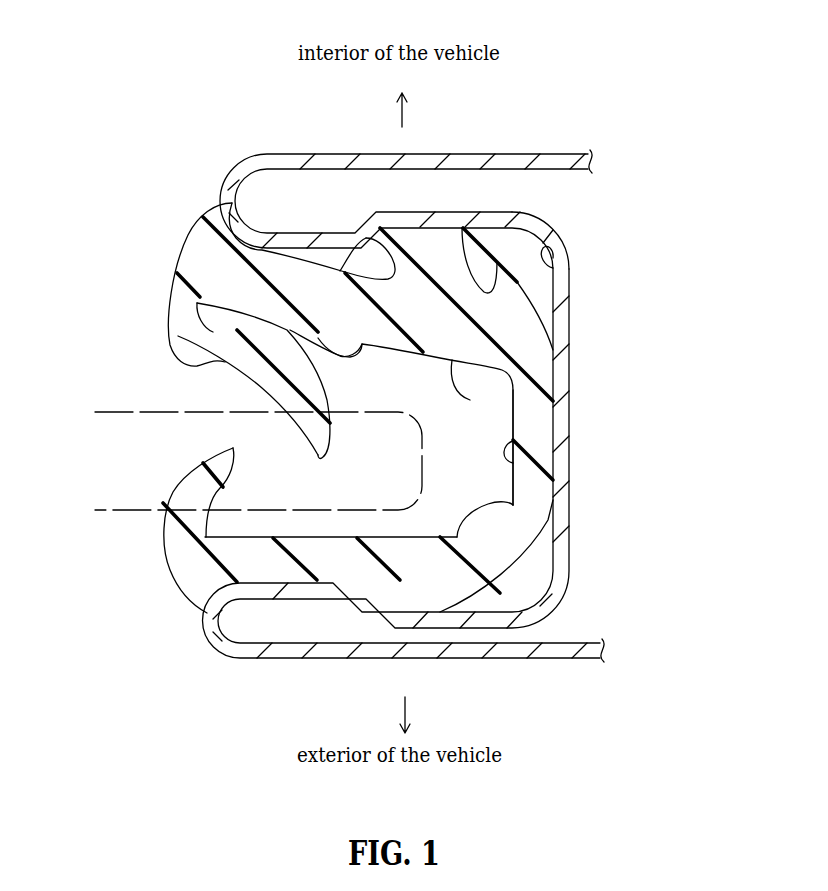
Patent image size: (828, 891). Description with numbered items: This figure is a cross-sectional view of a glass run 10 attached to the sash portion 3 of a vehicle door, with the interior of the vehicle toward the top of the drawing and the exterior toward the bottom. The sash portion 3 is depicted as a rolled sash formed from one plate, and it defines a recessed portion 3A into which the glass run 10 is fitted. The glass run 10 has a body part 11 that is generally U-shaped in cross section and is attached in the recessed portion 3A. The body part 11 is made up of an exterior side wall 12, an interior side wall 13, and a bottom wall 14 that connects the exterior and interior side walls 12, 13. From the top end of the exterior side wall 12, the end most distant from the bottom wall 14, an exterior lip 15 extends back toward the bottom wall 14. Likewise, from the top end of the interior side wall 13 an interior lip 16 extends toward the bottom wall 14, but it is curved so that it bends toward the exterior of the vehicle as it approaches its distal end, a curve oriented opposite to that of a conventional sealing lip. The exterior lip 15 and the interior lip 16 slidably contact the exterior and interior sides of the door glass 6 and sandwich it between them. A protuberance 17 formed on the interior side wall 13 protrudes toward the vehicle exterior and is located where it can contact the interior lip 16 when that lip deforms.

The sash portion 3 is at (272, 661).
The recessed portion 3A is at (548, 262).
The door glass 6 is at (125, 411).
The glass run 10 is at (130, 204).
The body part 11 is at (628, 373).
The exterior side wall 12 is at (513, 508).
The interior side wall 13 is at (470, 400).
The bottom wall 14 is at (513, 446).
The exterior lip 15 is at (170, 517).
The interior lip 16 is at (193, 364).
The protuberance 17 is at (374, 350).